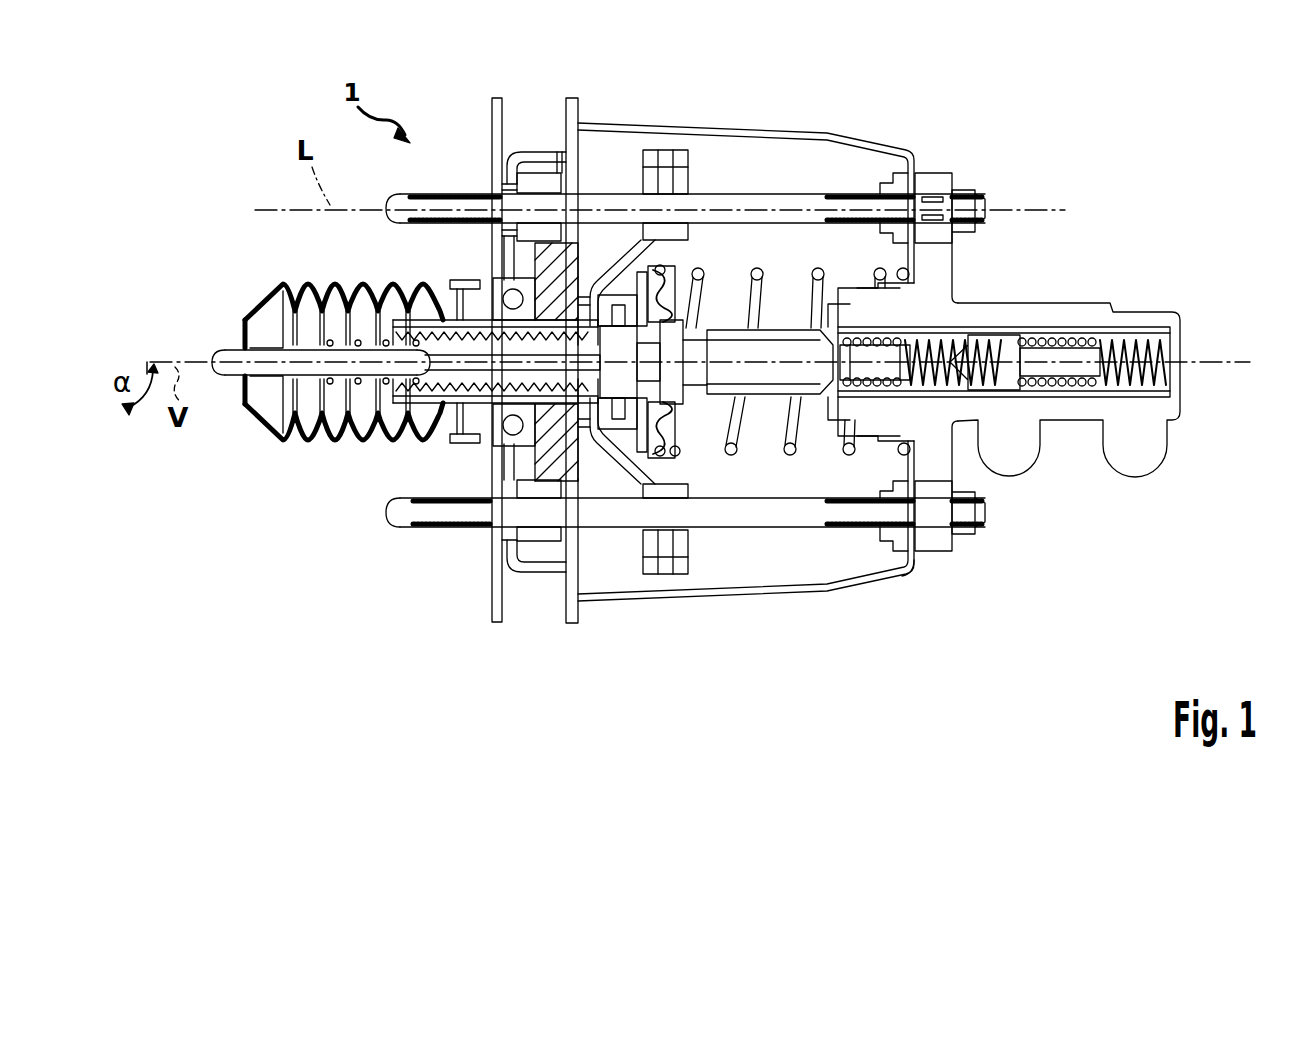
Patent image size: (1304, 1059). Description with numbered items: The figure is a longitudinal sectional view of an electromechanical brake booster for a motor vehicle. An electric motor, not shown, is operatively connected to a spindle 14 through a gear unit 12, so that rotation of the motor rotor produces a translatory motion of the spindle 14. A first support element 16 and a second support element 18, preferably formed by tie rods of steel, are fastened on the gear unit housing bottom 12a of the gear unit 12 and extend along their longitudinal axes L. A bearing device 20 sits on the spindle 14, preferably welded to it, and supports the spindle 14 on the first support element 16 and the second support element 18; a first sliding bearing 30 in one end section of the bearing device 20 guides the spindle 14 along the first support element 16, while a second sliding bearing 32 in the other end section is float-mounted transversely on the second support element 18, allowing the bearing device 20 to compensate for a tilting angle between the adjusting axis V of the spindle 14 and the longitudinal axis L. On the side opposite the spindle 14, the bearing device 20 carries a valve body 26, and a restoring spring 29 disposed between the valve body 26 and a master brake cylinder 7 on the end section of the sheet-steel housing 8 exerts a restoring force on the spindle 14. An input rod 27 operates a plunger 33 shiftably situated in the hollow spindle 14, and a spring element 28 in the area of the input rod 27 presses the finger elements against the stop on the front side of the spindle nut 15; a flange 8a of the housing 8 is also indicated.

The master brake cylinder 7 is at (1062, 315).
The housing 8 is at (850, 590).
The housing shell flange 8a is at (912, 567).
The gear unit 12 is at (563, 457).
The gear unit housing bottom 12a is at (545, 574).
The spindle 14 is at (445, 372).
The spindle nut 15 is at (533, 397).
The first support element 16 is at (782, 205).
The second support element 18 is at (777, 513).
The bearing device 20 is at (615, 485).
The valve body 26 is at (650, 383).
The input rod 27 is at (232, 356).
The spring element 28 is at (352, 418).
The restoring spring 29 is at (792, 456).
The first sliding bearing 30 is at (690, 175).
The second sliding bearing 32 is at (680, 574).
The plunger 33 is at (435, 416).